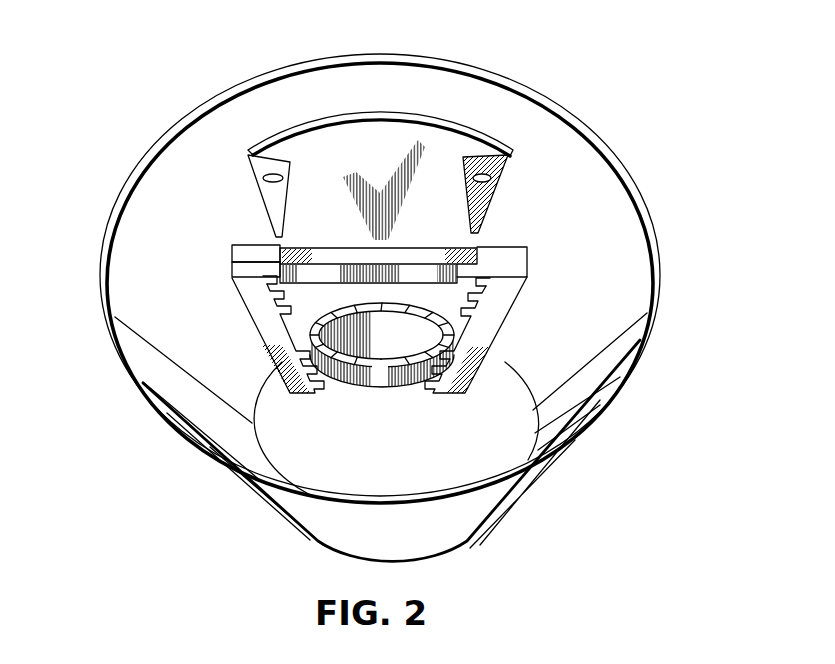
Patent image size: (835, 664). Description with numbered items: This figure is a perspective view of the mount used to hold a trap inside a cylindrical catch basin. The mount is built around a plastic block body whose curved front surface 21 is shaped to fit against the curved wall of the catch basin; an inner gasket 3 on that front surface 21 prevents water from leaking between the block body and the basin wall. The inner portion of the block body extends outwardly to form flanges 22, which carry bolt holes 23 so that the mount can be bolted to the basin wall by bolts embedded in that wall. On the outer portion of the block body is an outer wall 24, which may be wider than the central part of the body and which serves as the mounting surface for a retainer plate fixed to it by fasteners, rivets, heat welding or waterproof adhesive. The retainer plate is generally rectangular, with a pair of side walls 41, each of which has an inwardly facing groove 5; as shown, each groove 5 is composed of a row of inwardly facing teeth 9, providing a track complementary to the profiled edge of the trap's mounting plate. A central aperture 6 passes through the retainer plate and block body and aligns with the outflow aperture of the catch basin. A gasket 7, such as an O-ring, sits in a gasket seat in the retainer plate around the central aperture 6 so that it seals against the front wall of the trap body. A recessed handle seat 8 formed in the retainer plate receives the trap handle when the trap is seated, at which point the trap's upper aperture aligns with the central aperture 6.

The inner gasket 3 is at (322, 125).
The front surface 21 is at (431, 124).
The flanges 22 is at (483, 152).
The bolt holes 23 is at (500, 188).
The handle seat 8 is at (415, 249).
The outer wall 24 is at (238, 246).
The side walls 41 is at (232, 266).
The groove 5 is at (265, 276).
The gasket 7 is at (285, 317).
The teeth 9 is at (490, 290).
The central aperture 6 is at (398, 343).